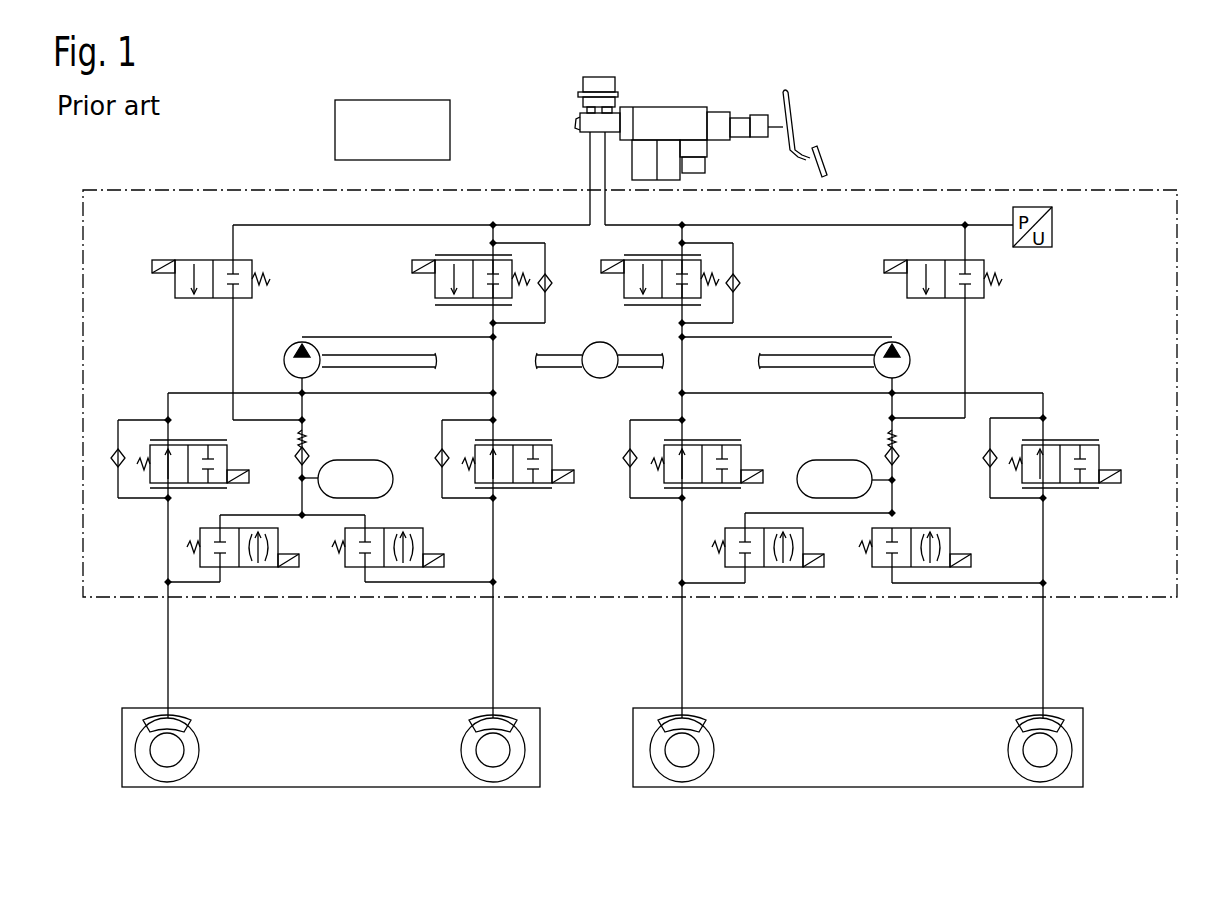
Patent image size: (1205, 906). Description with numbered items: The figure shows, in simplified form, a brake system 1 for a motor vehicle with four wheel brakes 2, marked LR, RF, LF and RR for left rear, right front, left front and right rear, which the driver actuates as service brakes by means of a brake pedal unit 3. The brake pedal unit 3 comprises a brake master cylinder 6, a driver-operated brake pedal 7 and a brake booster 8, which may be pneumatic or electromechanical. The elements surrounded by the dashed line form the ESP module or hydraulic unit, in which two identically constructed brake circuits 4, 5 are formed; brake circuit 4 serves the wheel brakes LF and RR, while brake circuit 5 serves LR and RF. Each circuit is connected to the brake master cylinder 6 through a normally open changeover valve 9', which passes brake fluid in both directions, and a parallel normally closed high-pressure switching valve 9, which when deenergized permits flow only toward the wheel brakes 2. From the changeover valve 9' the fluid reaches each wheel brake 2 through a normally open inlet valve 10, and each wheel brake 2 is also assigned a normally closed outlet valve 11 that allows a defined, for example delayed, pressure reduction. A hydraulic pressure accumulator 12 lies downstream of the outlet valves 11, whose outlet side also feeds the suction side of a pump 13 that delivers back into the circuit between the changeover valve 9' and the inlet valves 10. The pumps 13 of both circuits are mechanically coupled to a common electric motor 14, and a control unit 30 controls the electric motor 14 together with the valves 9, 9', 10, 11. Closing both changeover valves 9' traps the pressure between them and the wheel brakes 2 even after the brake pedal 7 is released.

The brake system 1 is at (1118, 92).
The wheel brakes 2 is at (135, 750).
The brake pedal unit 3 is at (826, 109).
The brake circuit 4 is at (1135, 237).
The brake circuit 5 is at (116, 237).
The brake master cylinder 6 is at (582, 80).
The brake pedal 7 is at (815, 155).
The brake booster 8 is at (678, 122).
The high-pressure switching valve 9 is at (559, 279).
The changeover valve 9' is at (548, 280).
The inlet valve 10 is at (249, 456).
The outlet valve 11 is at (299, 545).
The hydraulic pressure accumulator 12 is at (368, 458).
The pump 13 is at (292, 350).
The electric motor 14 is at (592, 378).
The control unit 30 is at (450, 130).